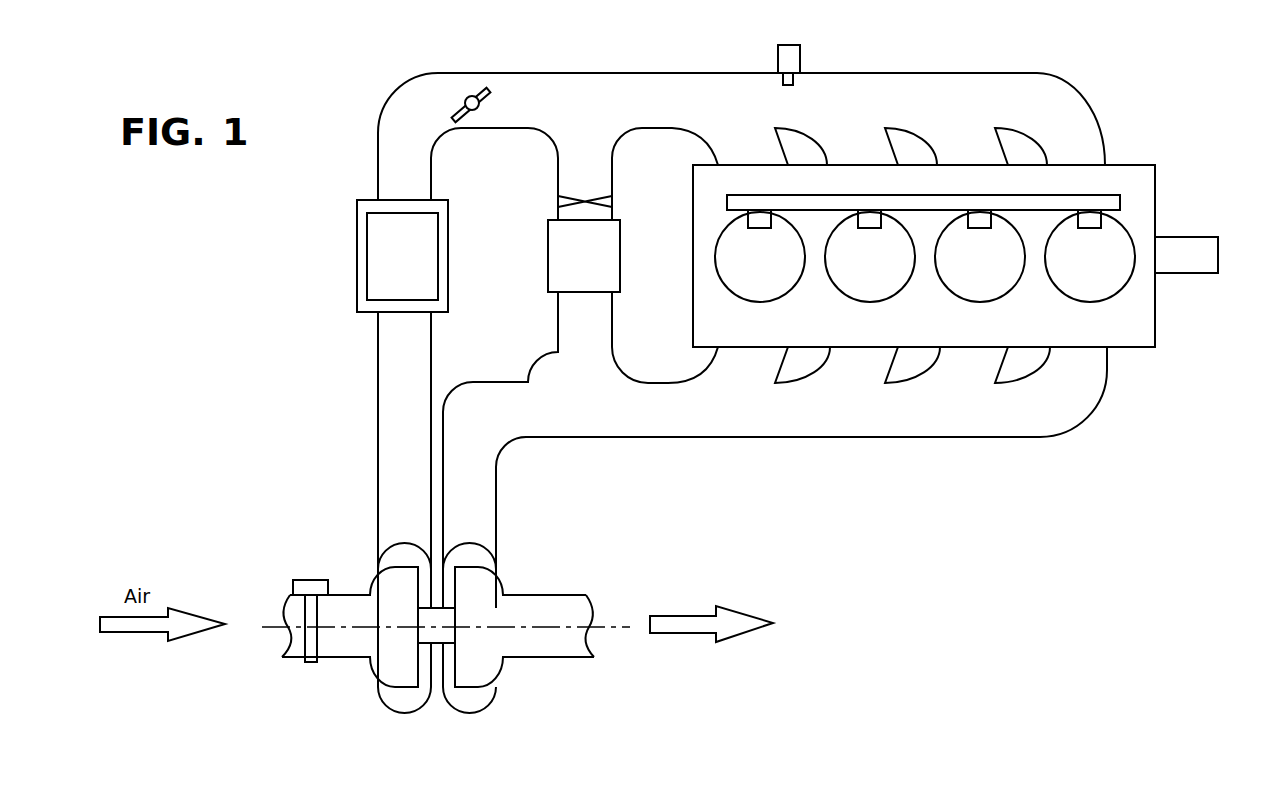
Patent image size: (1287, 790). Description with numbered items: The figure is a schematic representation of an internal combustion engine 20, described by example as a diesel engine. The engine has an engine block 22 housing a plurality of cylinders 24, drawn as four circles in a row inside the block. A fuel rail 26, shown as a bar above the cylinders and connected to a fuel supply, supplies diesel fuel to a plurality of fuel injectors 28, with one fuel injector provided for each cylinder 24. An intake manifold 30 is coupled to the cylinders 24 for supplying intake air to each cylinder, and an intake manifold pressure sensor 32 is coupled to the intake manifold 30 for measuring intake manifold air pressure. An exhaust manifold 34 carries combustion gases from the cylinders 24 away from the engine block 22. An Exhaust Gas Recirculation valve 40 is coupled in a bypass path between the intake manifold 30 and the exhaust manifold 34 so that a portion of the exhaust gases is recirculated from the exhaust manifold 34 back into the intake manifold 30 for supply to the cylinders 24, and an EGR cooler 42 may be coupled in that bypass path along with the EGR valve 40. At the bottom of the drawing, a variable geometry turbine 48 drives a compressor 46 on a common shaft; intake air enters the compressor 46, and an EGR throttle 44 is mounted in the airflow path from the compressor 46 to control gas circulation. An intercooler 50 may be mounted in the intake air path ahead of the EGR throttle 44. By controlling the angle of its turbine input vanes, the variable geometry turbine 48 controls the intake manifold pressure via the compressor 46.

The internal combustion engine 20 is at (697, 66).
The engine block 22 is at (863, 332).
The cylinders 24 is at (744, 296).
The fuel rail 26 is at (1048, 196).
The fuel injectors 28 is at (760, 220).
The intake manifold 30 is at (994, 73).
The intake manifold pressure sensor 32 is at (802, 58).
The exhaust manifold 34 is at (980, 440).
The EGR valve 40 is at (570, 196).
The EGR cooler 42 is at (545, 240).
The EGR throttle 44 is at (456, 89).
The compressor 46 is at (395, 655).
The variable geometry turbine 48 is at (474, 656).
The intercooler 50 is at (353, 257).